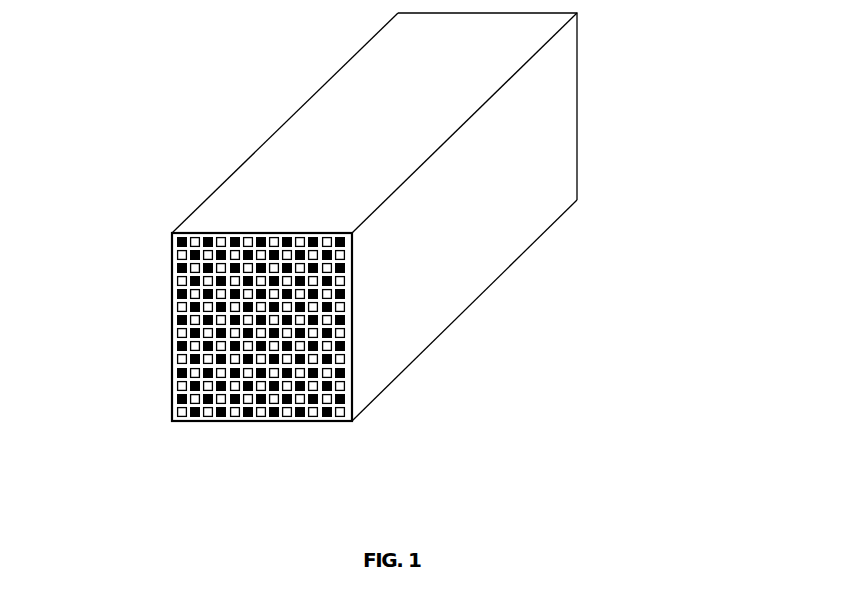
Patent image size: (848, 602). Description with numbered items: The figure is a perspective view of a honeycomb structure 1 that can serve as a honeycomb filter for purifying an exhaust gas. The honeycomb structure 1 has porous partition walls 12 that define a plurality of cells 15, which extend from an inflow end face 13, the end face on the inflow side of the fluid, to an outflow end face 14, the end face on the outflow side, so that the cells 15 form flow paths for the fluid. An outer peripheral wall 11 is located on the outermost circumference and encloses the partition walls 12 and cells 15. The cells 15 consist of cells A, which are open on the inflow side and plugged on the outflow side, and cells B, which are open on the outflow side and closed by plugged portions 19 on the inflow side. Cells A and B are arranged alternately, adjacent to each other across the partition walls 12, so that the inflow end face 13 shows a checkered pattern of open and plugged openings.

The honeycomb structure 1 is at (246, 106).
The outer peripheral wall 11 is at (502, 247).
The partition walls 12 is at (171, 335).
The inflow end face 13 is at (354, 421).
The outflow end face 14 is at (577, 135).
The cells 15 is at (171, 288).
The plugged portions 19 is at (171, 368).